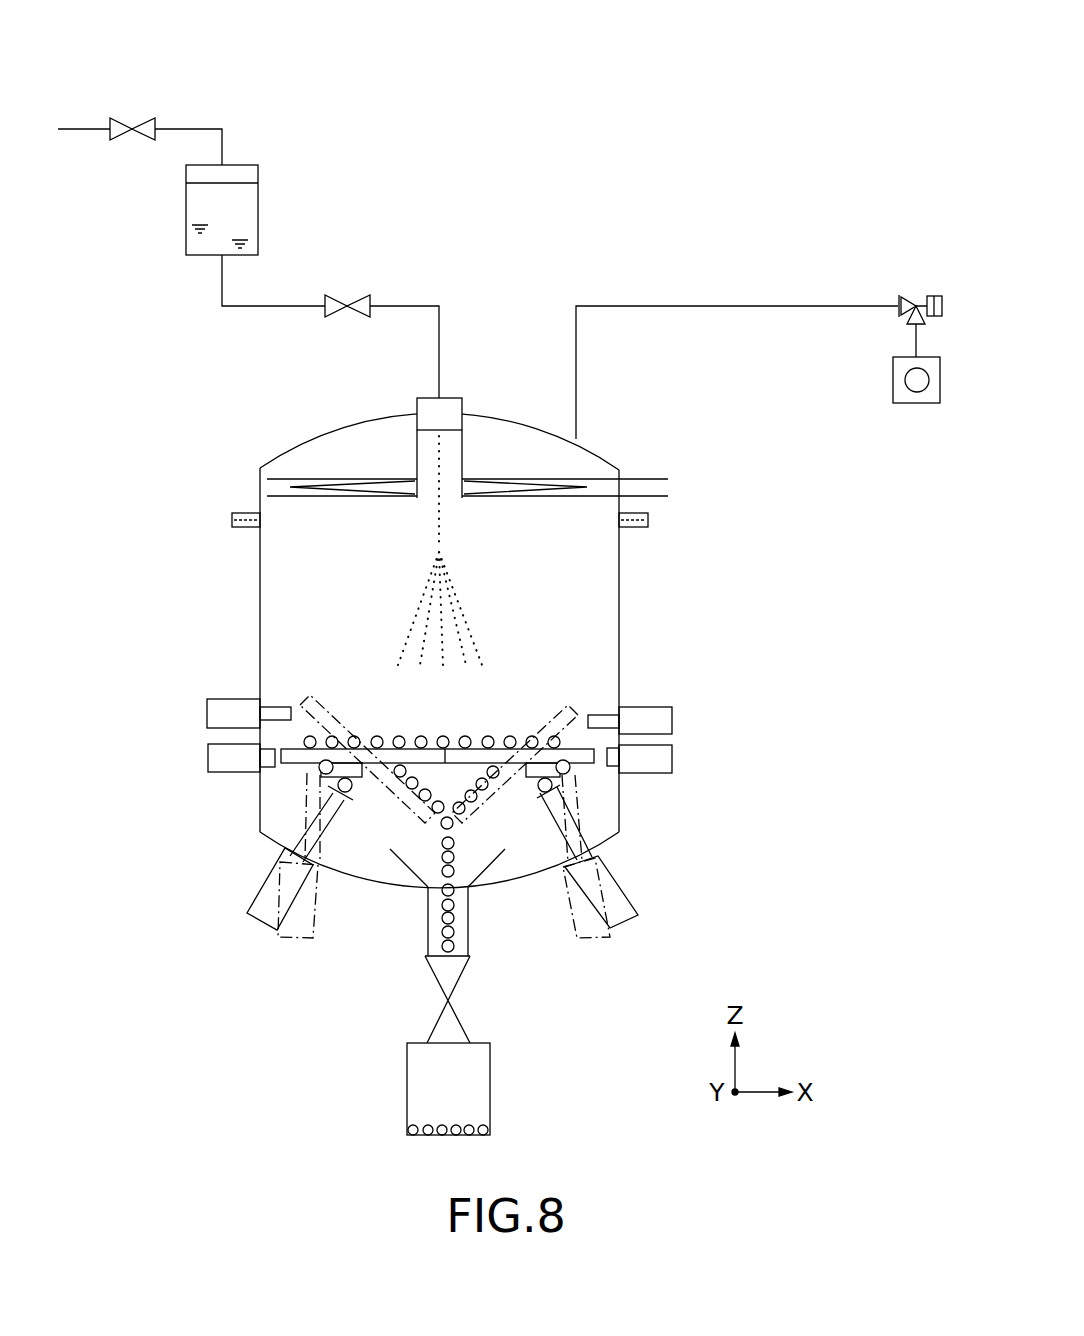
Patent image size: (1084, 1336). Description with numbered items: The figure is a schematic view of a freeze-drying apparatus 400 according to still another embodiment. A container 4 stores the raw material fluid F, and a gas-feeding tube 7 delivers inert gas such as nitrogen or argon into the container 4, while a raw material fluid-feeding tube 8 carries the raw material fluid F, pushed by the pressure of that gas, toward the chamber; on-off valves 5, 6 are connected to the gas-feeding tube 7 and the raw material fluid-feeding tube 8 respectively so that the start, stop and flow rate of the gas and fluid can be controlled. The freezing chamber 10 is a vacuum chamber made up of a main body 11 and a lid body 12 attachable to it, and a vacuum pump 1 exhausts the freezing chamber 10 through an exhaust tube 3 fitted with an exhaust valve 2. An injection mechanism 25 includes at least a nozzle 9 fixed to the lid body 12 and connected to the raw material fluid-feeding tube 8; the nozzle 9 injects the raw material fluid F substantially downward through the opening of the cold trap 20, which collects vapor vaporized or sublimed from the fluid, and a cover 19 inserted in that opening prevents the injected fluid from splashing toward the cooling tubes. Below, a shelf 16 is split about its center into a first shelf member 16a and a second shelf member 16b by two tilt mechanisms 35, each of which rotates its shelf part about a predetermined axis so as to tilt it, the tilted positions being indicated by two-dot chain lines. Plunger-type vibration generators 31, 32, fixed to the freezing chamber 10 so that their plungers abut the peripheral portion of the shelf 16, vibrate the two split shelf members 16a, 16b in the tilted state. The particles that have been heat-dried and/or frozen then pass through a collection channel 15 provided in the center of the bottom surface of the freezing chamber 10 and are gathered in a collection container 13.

The freeze-drying apparatus 400 is at (484, 100).
The vacuum pump 1 is at (902, 402).
The exhaust valve 2 is at (907, 296).
The exhaust tube 3 is at (720, 306).
The container 4 is at (258, 215).
The on-off valve 5 is at (143, 120).
The on-off valve 6 is at (362, 297).
The gas-feeding tube 7 is at (195, 130).
The raw material fluid-feeding tube 8 is at (420, 312).
The nozzle 9 is at (462, 398).
The freezing chamber 10 is at (474, 623).
The main body 11 is at (620, 645).
The lid body 12 is at (522, 417).
The collection container 13 is at (490, 1110).
The collection channel 15 is at (428, 923).
The shelf 16 is at (297, 762).
The first shelf member 16a is at (317, 710).
The second shelf member 16b is at (560, 718).
The cover 19 is at (420, 463).
The cold trap 20 is at (645, 470).
The injection mechanism 25 is at (404, 382).
The vibration generator 31 is at (222, 757).
The vibration generator 32 is at (215, 717).
The tilt mechanism 35 is at (228, 911).
The raw material fluid F is at (195, 212).